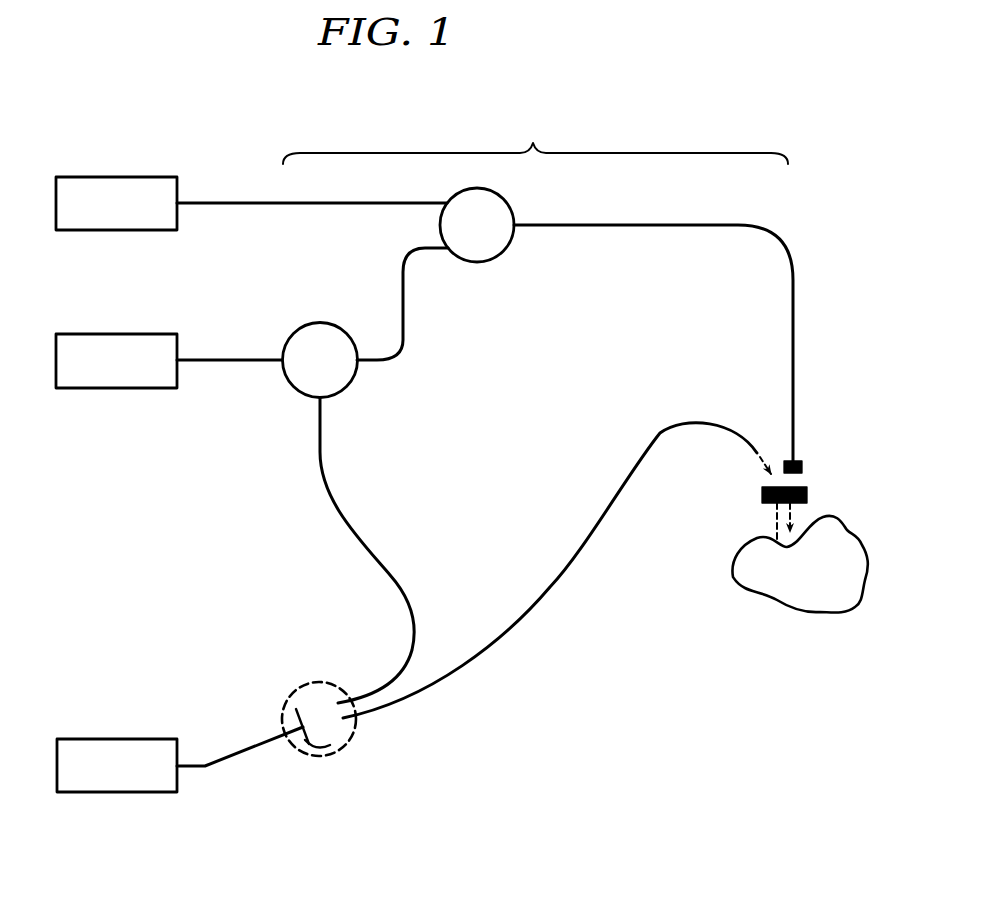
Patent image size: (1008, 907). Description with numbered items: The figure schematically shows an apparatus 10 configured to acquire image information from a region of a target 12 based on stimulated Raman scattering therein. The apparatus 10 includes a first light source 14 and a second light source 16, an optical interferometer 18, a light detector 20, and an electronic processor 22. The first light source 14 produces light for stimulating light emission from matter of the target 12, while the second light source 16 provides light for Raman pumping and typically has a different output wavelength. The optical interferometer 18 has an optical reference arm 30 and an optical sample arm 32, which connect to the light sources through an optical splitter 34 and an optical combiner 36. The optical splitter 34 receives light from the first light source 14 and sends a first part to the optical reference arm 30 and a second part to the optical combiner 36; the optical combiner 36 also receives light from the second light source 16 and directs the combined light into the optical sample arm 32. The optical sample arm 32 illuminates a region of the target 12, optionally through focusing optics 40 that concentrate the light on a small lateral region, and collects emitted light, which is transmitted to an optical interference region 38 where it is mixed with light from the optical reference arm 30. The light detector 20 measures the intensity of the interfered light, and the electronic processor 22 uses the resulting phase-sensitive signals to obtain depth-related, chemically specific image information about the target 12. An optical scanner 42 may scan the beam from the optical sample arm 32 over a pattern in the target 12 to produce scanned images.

The apparatus 10 is at (396, 90).
The target 12 is at (820, 588).
The first light source 14 is at (129, 373).
The second light source 16 is at (129, 216).
The optical interferometer 18 is at (535, 138).
The light detector 20 is at (330, 745).
The electronic processor 22 is at (130, 778).
The optical reference arm 30 is at (296, 507).
The optical sample arm 32 is at (751, 249).
The optical splitter 34 is at (333, 372).
The optical combiner 36 is at (490, 237).
The optical interference region 38 is at (306, 697).
The focusing optics 40 is at (760, 494).
The optical scanner 42 is at (801, 466).